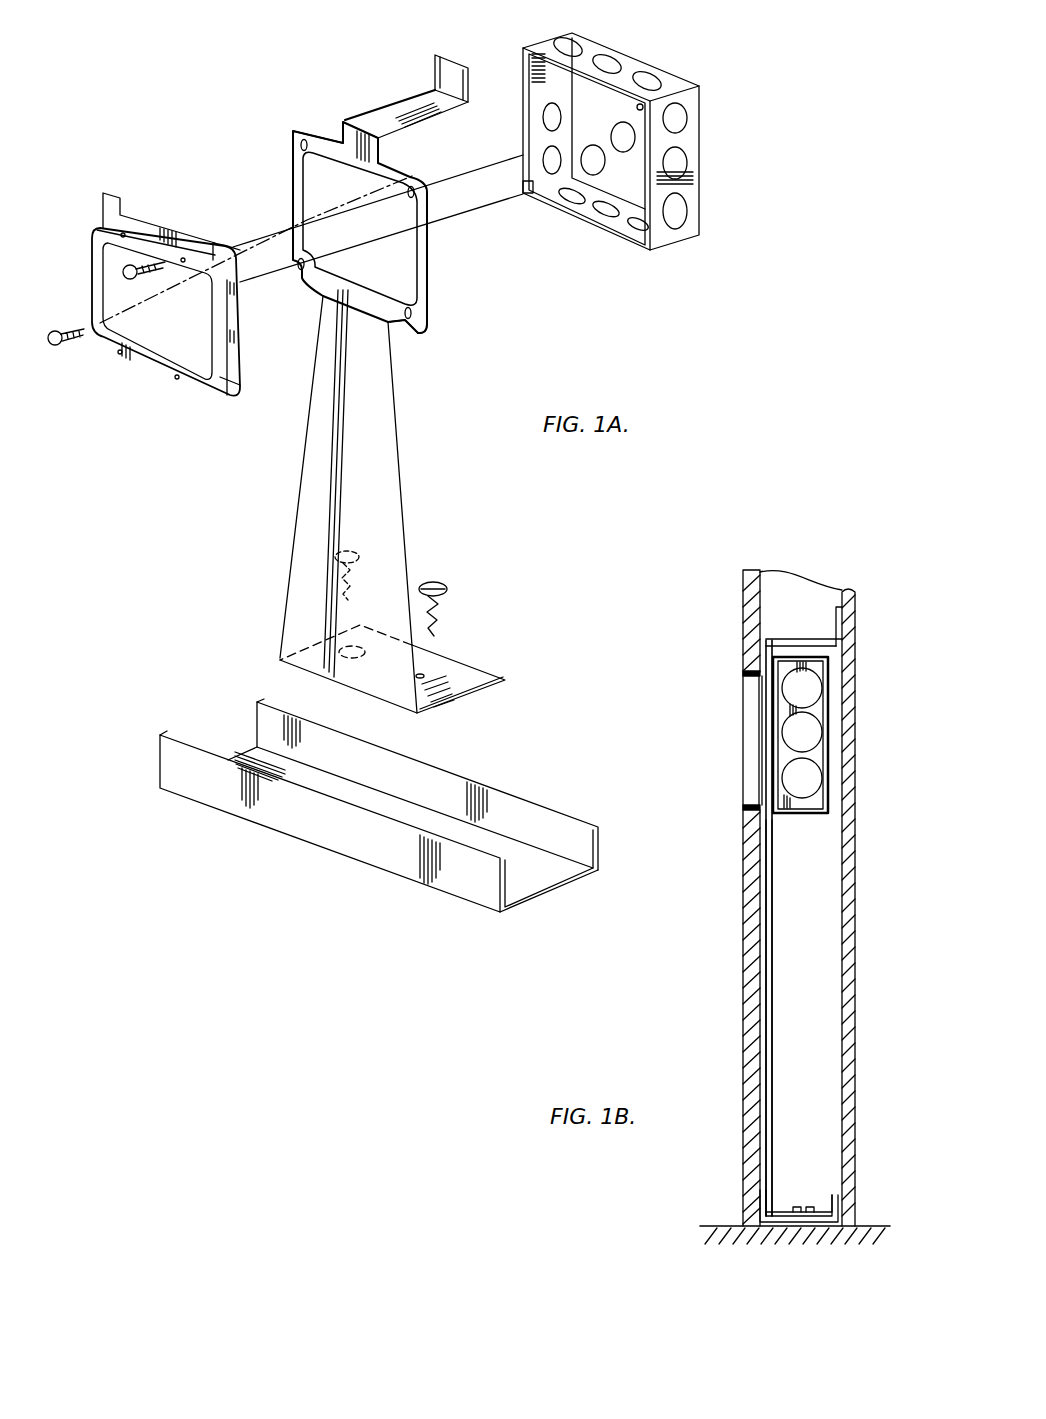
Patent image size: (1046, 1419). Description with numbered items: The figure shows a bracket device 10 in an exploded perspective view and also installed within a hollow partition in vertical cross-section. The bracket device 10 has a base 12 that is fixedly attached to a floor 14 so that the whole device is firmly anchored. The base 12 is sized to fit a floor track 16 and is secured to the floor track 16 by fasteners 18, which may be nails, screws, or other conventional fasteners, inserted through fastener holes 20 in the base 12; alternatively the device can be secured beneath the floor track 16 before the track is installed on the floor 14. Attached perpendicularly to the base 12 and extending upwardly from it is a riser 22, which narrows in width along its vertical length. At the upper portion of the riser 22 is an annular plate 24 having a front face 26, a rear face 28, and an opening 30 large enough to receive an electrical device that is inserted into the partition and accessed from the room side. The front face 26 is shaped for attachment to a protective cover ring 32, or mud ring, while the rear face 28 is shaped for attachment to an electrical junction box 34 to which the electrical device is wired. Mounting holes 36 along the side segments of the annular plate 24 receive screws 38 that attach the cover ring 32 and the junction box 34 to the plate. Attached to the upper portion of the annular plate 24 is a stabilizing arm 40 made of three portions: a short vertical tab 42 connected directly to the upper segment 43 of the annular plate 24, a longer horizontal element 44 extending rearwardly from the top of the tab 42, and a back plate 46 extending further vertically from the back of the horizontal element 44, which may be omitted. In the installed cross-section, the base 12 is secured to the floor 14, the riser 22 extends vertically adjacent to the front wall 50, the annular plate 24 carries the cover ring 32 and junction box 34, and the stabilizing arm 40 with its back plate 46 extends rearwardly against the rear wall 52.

In FIG. 1A, the bracket device 10 is at (408, 463).
In FIG. 1B, the bracket device 10 is at (764, 623).
In FIG. 1A, the base 12 is at (404, 669).
In FIG. 1B, the base 12 is at (835, 1197).
In FIG. 1B, the floor 14 is at (705, 1222).
In FIG. 1A, the floor track 16 is at (573, 832).
In FIG. 1B, the floor track 16 is at (760, 1203).
In FIG. 1A, the fasteners 18 is at (418, 585).
In FIG. 1B, the fasteners 18 is at (803, 1205).
In FIG. 1A, the fastener holes 20 is at (420, 673).
In FIG. 1A, the riser 22 is at (387, 503).
In FIG. 1B, the riser 22 is at (770, 1030).
In FIG. 1A, the annular plate 24 is at (371, 229).
In FIG. 1B, the annular plate 24 is at (770, 753).
In FIG. 1A, the front face 26 is at (422, 320).
In FIG. 1A, the rear face 28 is at (432, 284).
In FIG. 1A, the opening 30 is at (306, 200).
In FIG. 1A, the protective cover ring 32 is at (144, 306).
In FIG. 1B, the protective cover ring 32 is at (760, 705).
In FIG. 1A, the electrical junction box 34 is at (692, 117).
In FIG. 1B, the electrical junction box 34 is at (817, 758).
In FIG. 1A, the mounting holes 36 is at (299, 145).
In FIG. 1A, the screws 38 is at (128, 276).
In FIG. 1A, the stabilizing arm 40 is at (386, 90).
In FIG. 1B, the stabilizing arm 40 is at (830, 801).
In FIG. 1A, the short vertical tab 42 is at (341, 130).
In FIG. 1A, the upper segment 43 is at (293, 131).
In FIG. 1A, the horizontal element 44 is at (412, 103).
In FIG. 1A, the back plate 46 is at (446, 57).
In FIG. 1B, the back plate 46 is at (842, 623).
In FIG. 1B, the front wall 50 is at (743, 882).
In FIG. 1B, the rear wall 52 is at (855, 858).